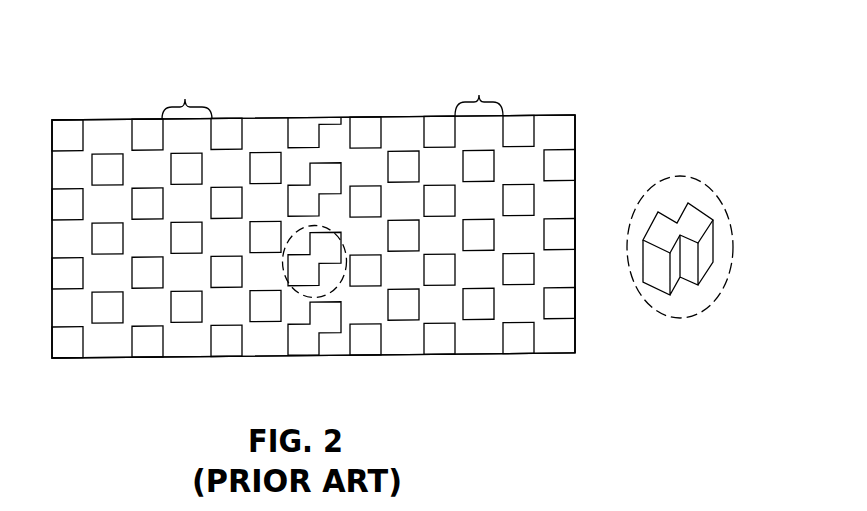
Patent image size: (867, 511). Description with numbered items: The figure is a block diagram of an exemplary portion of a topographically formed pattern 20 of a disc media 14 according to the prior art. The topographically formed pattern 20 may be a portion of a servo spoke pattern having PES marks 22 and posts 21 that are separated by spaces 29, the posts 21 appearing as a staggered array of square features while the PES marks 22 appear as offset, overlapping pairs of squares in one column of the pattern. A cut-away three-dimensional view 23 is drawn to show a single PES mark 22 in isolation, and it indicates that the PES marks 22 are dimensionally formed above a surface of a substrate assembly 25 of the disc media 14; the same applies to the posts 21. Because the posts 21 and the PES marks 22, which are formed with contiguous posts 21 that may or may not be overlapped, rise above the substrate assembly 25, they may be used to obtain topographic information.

The disc media 14 is at (593, 9).
The topographically formed pattern 20 is at (112, 120).
The posts 21 is at (433, 120).
The PES marks 22 is at (307, 123).
The cut-away three-dimensional view 23 is at (302, 293).
The substrate assembly 25 is at (560, 127).
The spaces 29 is at (185, 99).